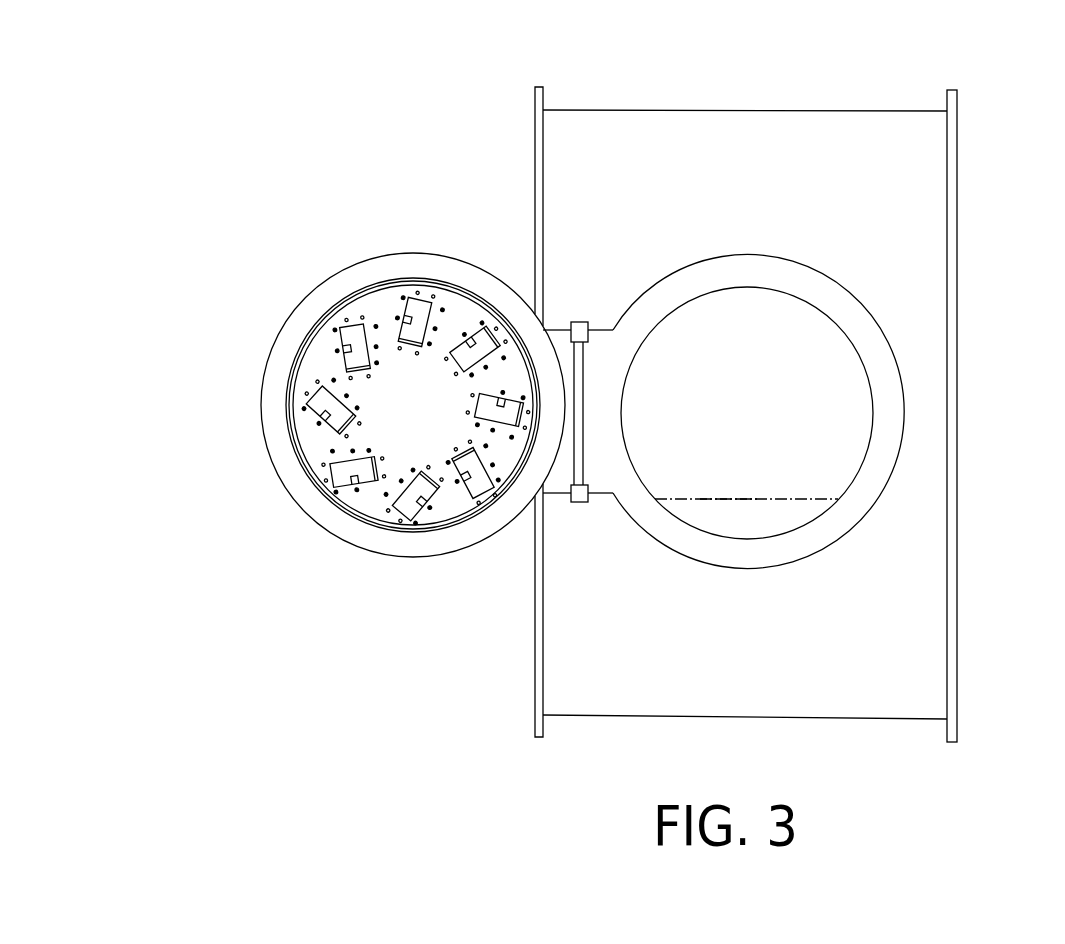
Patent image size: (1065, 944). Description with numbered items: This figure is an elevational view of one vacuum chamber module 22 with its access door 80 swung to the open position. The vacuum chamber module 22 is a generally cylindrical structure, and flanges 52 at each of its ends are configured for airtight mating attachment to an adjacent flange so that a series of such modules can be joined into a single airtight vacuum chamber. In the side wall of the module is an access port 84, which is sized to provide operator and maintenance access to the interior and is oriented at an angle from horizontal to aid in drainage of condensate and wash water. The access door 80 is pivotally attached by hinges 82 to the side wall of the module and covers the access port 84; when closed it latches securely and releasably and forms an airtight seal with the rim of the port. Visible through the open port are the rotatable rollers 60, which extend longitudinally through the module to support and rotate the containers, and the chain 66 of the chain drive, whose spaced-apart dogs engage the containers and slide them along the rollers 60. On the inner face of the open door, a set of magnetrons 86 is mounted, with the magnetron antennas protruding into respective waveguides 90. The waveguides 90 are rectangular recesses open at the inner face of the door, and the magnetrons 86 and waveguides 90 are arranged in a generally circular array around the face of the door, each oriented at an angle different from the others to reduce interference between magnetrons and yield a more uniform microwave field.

The vacuum chamber module 22 is at (640, 123).
The flange 52 is at (957, 100).
The rotatable roller 60 is at (720, 497).
The chain 66 is at (728, 512).
The access door 80 is at (262, 403).
The hinge 82 is at (578, 320).
The access port 84 is at (873, 325).
The magnetron 86 is at (412, 325).
The waveguide 90 is at (362, 320).